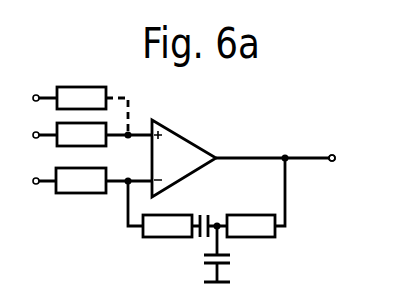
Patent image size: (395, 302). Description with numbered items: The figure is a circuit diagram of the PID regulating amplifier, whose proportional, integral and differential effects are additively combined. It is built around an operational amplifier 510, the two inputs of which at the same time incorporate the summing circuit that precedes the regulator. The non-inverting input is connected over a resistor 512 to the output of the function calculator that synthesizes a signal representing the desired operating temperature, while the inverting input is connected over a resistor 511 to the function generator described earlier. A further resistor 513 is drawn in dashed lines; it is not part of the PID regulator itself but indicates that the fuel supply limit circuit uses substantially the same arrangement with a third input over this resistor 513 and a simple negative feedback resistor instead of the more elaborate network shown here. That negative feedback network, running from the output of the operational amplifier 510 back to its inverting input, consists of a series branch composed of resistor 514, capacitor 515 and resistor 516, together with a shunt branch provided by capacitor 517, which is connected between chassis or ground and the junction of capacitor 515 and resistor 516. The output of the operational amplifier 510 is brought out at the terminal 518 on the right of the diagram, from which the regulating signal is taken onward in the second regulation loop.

The operational amplifier 510 is at (188, 148).
The resistor 511 is at (81, 183).
The resistor 512 is at (70, 133).
The resistor 513 is at (77, 95).
The resistor 514 is at (162, 227).
The capacitor 515 is at (205, 216).
The resistor 516 is at (253, 230).
The capacitor 517 is at (230, 260).
The output terminal 518 is at (332, 155).